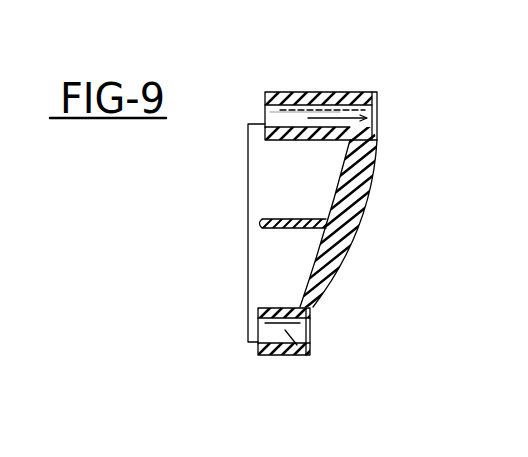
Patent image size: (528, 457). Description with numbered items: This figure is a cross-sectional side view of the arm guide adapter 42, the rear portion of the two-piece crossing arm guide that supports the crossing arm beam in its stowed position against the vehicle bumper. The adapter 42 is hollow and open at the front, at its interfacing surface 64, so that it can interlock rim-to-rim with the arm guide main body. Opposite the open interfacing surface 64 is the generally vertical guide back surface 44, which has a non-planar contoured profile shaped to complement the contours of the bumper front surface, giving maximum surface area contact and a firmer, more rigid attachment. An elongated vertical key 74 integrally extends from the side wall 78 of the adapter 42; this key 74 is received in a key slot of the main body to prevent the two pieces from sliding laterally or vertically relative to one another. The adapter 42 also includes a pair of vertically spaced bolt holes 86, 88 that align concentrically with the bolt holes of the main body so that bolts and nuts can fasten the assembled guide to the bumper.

The arm guide adapter 42 is at (331, 80).
The guide back surface 44 is at (368, 182).
The interfacing surface 64 is at (258, 347).
The elongated vertical key 74 is at (257, 173).
The side wall 78 is at (305, 184).
The bolt hole 86 is at (281, 119).
The bolt hole 88 is at (310, 353).